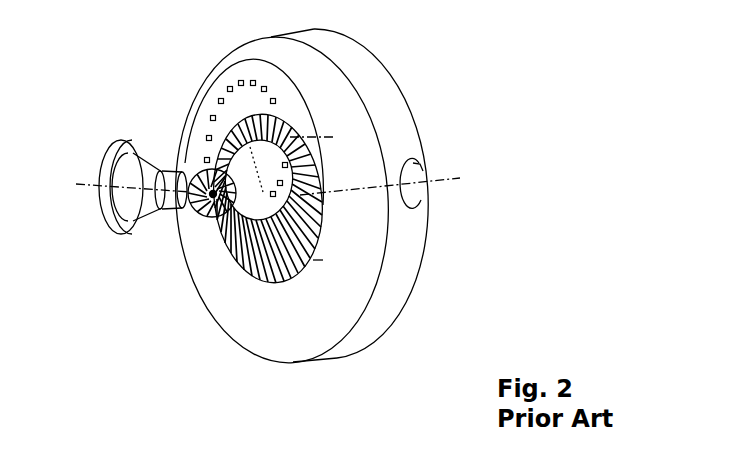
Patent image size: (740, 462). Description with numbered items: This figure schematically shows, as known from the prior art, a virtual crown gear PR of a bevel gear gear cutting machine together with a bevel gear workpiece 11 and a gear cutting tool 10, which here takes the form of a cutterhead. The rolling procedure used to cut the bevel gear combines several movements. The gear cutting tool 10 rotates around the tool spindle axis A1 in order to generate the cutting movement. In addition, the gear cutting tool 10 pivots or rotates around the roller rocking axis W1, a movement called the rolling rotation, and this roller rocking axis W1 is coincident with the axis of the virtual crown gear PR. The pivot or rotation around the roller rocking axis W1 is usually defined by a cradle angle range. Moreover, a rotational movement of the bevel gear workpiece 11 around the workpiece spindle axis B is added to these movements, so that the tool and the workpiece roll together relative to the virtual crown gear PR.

The gear cutting tool 10 is at (209, 105).
The bevel gear workpiece 11 is at (196, 212).
The workpiece spindle axis B is at (123, 186).
The tool spindle axis A1 is at (326, 139).
The roller rocking axis W1 is at (397, 182).
The virtual crown gear PR is at (320, 237).